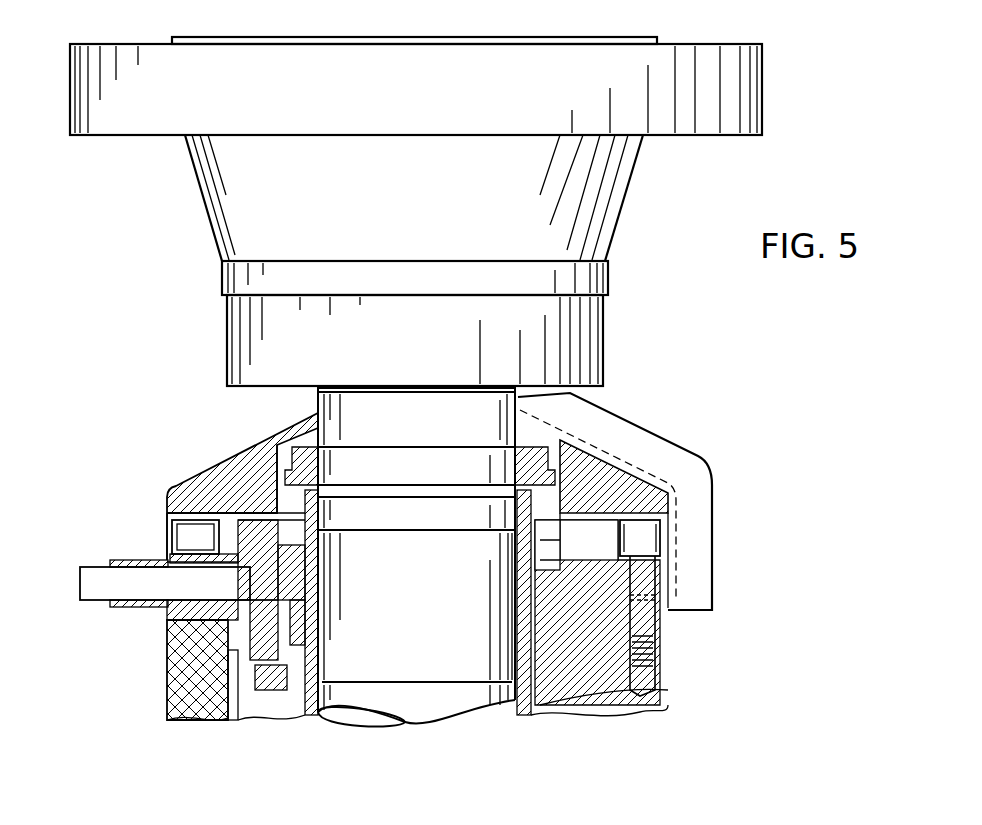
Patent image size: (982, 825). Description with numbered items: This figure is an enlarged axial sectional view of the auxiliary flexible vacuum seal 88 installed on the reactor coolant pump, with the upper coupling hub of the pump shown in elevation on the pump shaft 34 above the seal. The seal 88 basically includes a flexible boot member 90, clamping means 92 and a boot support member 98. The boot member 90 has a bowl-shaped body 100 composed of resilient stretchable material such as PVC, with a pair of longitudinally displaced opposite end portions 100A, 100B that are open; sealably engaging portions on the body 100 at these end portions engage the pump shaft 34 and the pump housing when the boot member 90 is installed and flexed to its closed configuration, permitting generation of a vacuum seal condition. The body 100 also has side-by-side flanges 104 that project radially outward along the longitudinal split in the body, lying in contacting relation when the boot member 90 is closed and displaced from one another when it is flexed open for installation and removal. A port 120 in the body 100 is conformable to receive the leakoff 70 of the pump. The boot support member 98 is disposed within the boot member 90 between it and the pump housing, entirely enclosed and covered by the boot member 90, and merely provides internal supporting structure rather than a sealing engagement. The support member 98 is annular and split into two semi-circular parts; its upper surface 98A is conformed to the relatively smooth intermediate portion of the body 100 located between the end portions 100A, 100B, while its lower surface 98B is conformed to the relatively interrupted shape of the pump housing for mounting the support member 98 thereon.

The shaft 34 is at (487, 654).
The leakoff 70 is at (98, 565).
The auxiliary flexible vacuum seal 88 is at (652, 410).
The flexible boot member 90 is at (178, 478).
The clamping means 92 is at (708, 458).
The boot support member 98 is at (643, 497).
The upper surface 98A is at (225, 462).
The lower surface 98B is at (238, 568).
The bowl-shaped body 100 is at (255, 443).
The upper end portion 100A is at (318, 405).
The lower end portion 100B is at (165, 608).
The flanges 104 is at (705, 553).
The port 120 is at (128, 562).